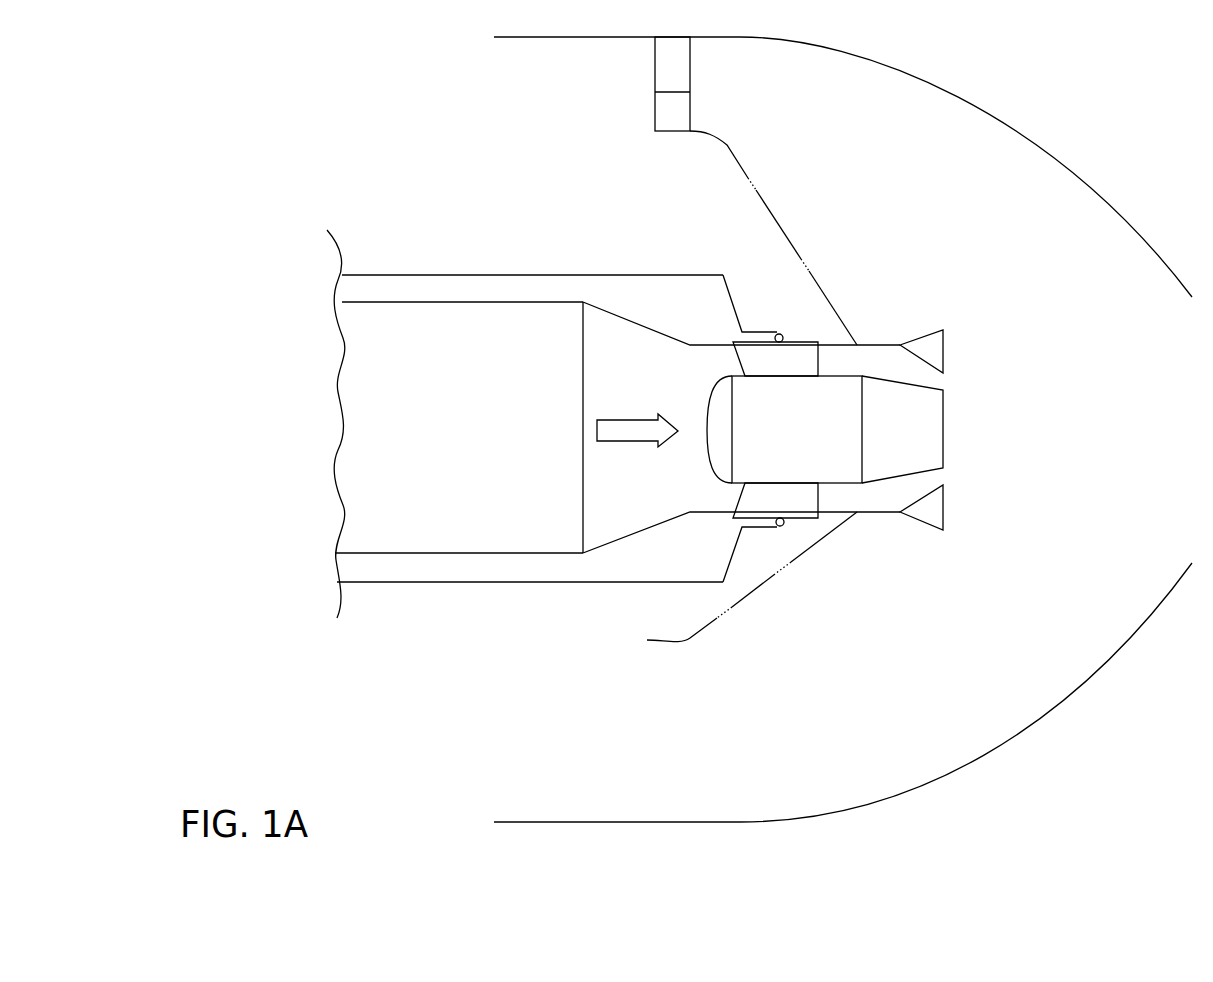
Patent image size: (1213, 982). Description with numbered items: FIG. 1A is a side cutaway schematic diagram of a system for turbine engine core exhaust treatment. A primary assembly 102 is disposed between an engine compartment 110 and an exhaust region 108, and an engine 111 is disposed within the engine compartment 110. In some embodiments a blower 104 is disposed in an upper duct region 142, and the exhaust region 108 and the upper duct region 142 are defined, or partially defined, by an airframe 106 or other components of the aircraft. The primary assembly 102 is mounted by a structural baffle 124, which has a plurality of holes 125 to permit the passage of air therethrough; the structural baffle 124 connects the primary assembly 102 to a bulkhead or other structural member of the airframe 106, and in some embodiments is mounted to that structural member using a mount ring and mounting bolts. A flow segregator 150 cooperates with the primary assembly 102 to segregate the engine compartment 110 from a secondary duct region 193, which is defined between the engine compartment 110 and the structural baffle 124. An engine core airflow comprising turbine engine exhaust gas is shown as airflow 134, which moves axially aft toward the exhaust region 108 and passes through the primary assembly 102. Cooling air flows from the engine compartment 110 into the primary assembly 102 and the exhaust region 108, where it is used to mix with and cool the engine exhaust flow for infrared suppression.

The primary assembly 102 is at (968, 430).
The blower 104 is at (673, 84).
The airframe 106 is at (1022, 130).
The exhaust region 108 is at (1168, 424).
The engine compartment 110 is at (638, 301).
The engine 111 is at (423, 432).
The structural baffle 124 is at (774, 210).
The holes 125 is at (748, 191).
The airflow 134 is at (637, 430).
The upper duct region 142 is at (554, 96).
The flow segregator 150 is at (782, 334).
The secondary duct region 193 is at (773, 276).